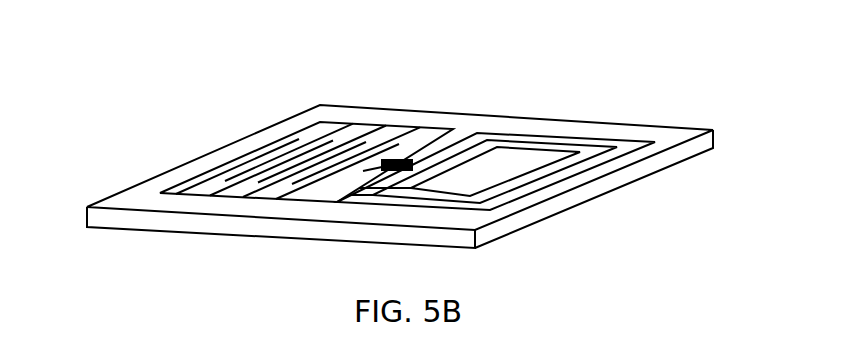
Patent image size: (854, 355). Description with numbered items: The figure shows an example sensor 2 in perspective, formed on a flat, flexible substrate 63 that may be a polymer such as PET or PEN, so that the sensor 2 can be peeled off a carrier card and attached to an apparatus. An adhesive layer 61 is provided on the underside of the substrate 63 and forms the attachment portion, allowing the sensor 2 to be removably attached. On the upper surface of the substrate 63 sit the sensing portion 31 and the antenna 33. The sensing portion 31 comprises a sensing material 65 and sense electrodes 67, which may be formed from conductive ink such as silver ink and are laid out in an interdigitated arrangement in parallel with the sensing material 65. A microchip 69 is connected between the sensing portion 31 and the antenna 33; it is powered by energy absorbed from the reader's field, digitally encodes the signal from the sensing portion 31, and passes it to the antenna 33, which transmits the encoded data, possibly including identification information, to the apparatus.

The sensor 2 is at (393, 164).
The sensing portion 31 is at (394, 110).
The antenna 33 is at (536, 128).
The adhesive layer 61 is at (370, 164).
The substrate 63 is at (86, 220).
The sensing material 65 is at (173, 185).
The sense electrodes 67 is at (272, 145).
The microchip 69 is at (363, 172).